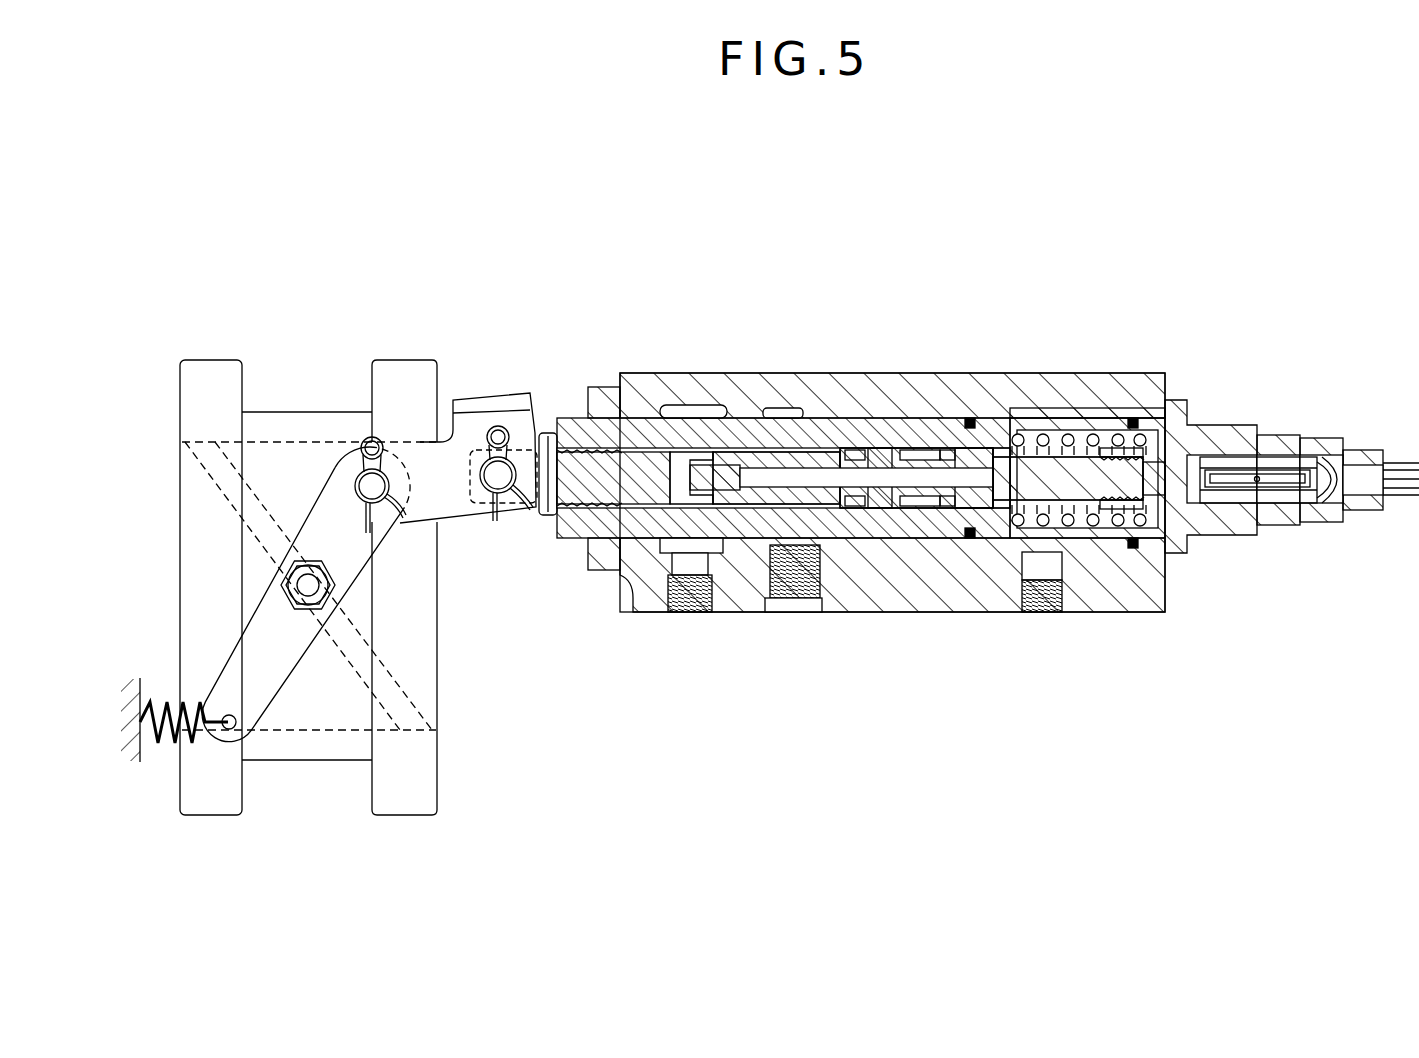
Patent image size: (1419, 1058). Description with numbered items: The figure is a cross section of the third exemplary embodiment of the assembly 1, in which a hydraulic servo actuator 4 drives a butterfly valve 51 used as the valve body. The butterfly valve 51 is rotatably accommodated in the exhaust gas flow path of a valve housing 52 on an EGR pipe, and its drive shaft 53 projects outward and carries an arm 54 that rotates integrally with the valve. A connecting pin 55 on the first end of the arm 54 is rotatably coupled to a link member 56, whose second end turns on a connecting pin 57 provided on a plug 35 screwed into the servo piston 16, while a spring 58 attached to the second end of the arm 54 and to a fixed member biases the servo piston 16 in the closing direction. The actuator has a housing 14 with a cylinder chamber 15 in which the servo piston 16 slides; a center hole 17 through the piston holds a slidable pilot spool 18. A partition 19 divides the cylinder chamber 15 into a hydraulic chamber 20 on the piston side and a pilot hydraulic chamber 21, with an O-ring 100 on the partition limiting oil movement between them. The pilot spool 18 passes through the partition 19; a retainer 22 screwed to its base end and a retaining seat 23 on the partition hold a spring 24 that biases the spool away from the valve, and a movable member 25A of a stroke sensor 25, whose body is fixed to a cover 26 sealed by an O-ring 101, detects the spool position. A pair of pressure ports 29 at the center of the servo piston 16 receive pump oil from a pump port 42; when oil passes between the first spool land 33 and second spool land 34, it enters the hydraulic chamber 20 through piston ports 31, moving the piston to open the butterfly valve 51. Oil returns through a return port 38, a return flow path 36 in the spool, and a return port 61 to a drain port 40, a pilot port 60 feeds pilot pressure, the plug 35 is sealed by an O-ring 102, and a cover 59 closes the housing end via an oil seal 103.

The hydraulic pressure control device 1 is at (1073, 263).
The hydraulic servo actuator 4 is at (1292, 409).
The housing 14 is at (892, 366).
The cylinder chamber 15 is at (950, 545).
The servo piston 16 is at (873, 550).
The center hole 17 is at (583, 538).
The pilot spool 18 is at (1101, 498).
The partition 19 is at (1000, 455).
The hydraulic chamber 20 is at (920, 540).
The pilot hydraulic chamber 21 is at (1100, 540).
The retainer 22 is at (1168, 535).
The retaining seat 23 is at (1012, 530).
The spring 24 is at (1120, 540).
The stroke sensor 25 is at (1285, 440).
The movable member 25A is at (1215, 425).
The cover 26 is at (1192, 545).
The pressure ports 29 is at (858, 548).
The piston ports 31 is at (900, 445).
The first spool land 33 is at (795, 415).
The second spool land 34 is at (868, 443).
The plug 35 is at (548, 514).
The return flow path 36 is at (878, 471).
The return port 38 is at (940, 448).
The drain port 40 is at (692, 612).
The pump port 42 is at (790, 612).
The butterfly valve 51 is at (346, 556).
The valve housing 52 is at (410, 362).
The drive shaft 53 is at (300, 596).
The arm 54 is at (280, 693).
The connecting pin 55 is at (388, 486).
The link member 56 is at (458, 513).
The connecting pin 57 is at (490, 480).
The spring 58 is at (160, 748).
The cover 59 is at (603, 393).
The pilot port 60 is at (1043, 612).
The return port 61 is at (635, 600).
The O-ring 100 is at (985, 545).
The O-ring 101 is at (1145, 575).
The O-ring 102 is at (560, 535).
The oil seal 103 is at (640, 395).